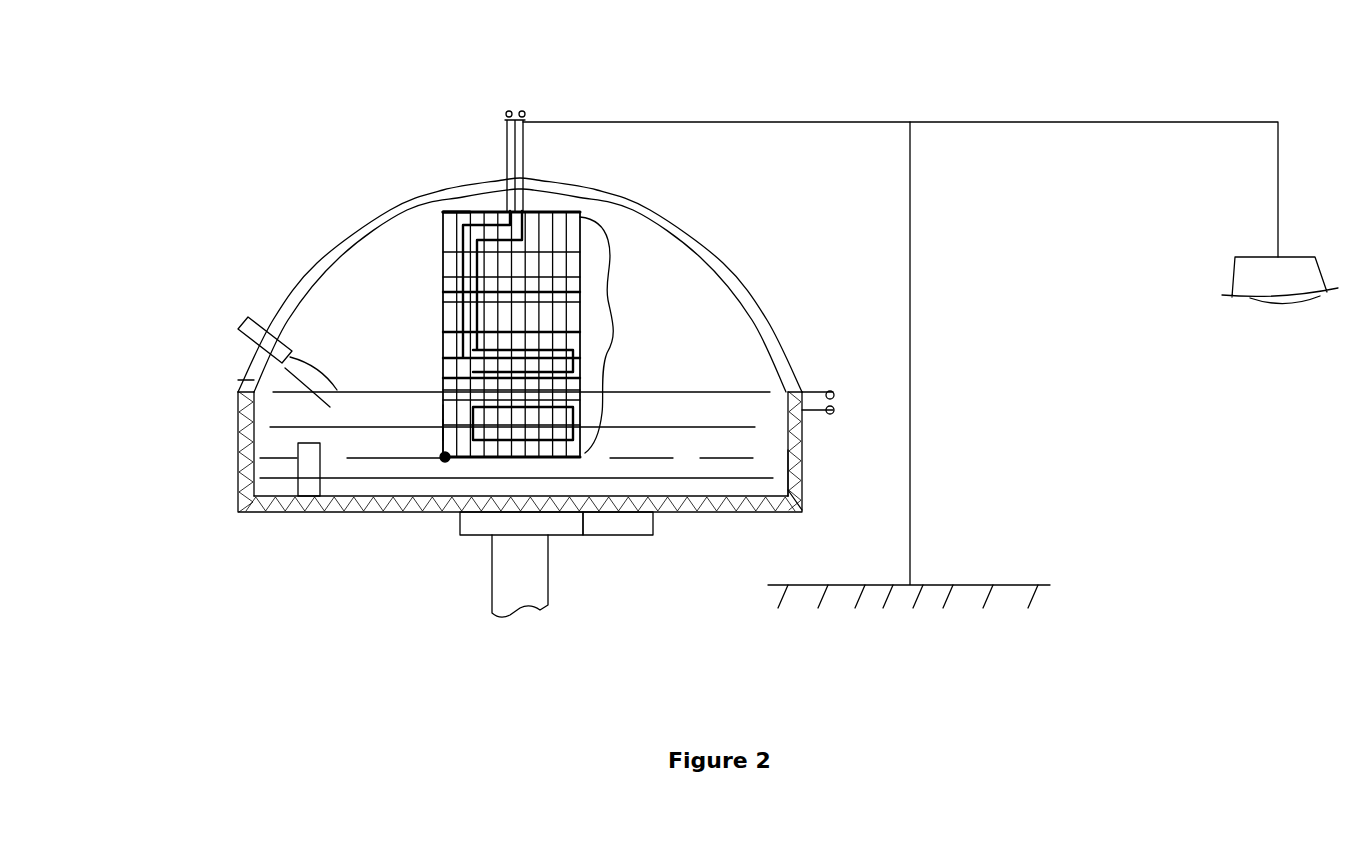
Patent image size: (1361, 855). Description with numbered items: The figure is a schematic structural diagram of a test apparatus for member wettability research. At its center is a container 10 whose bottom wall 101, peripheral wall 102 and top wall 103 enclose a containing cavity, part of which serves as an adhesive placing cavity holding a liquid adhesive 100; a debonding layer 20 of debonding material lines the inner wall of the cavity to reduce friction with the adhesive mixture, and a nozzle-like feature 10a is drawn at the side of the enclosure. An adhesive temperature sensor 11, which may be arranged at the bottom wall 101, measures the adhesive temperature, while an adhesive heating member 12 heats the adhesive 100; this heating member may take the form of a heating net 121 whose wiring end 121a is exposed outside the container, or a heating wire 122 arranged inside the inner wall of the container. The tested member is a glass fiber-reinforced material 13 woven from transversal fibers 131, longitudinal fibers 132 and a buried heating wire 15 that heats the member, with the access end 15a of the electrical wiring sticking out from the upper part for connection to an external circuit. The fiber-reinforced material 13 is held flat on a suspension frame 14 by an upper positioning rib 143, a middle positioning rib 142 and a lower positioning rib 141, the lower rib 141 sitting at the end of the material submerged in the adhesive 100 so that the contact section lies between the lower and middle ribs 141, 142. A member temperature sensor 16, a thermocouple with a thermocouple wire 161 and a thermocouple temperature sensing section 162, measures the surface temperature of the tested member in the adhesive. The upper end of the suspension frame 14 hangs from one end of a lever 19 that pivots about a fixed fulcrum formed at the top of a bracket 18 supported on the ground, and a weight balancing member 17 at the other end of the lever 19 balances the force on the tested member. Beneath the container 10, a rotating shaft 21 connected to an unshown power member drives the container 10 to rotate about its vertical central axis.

The container 10 is at (97, 393).
The water inlet nozzle 10a is at (243, 324).
The adhesive 100 is at (787, 490).
The bottom wall 101 is at (240, 498).
The peripheral wall 102 is at (240, 428).
The top wall 103 is at (240, 378).
The adhesive temperature sensor 11 is at (310, 467).
The adhesive heating member 12 is at (867, 422).
The heating net 121 is at (753, 393).
The heating wire 122 is at (753, 457).
The wiring end 121a is at (830, 393).
The fiber-reinforced material 13 is at (603, 375).
The transversal fiber 131 is at (570, 263).
The longitudinal fiber 132 is at (590, 330).
The suspension frame 14 is at (538, 210).
The lower positioning rib 141 is at (570, 458).
The middle positioning rib 142 is at (612, 350).
The upper positioning rib 143 is at (443, 212).
The heating wire 15 is at (462, 368).
The access end of an electric wiring end or a liquid pipe 15a is at (507, 113).
The member temperature sensor 16 is at (235, 650).
The thermocouple wire 161 is at (443, 420).
The thermocouple temperature sensing section 162 is at (445, 457).
The weight balancing member 17 is at (1255, 272).
The bracket 18 is at (912, 322).
The lever 19 is at (960, 123).
The debonding layer 20 is at (448, 500).
The rotating shaft 21 is at (527, 563).